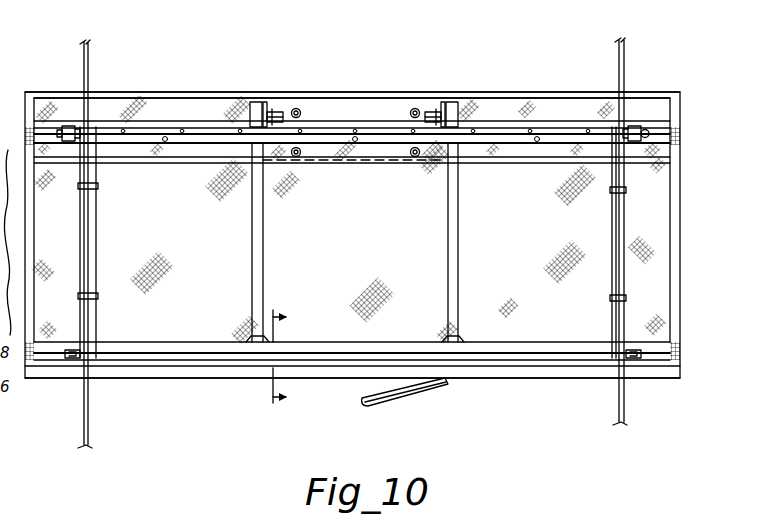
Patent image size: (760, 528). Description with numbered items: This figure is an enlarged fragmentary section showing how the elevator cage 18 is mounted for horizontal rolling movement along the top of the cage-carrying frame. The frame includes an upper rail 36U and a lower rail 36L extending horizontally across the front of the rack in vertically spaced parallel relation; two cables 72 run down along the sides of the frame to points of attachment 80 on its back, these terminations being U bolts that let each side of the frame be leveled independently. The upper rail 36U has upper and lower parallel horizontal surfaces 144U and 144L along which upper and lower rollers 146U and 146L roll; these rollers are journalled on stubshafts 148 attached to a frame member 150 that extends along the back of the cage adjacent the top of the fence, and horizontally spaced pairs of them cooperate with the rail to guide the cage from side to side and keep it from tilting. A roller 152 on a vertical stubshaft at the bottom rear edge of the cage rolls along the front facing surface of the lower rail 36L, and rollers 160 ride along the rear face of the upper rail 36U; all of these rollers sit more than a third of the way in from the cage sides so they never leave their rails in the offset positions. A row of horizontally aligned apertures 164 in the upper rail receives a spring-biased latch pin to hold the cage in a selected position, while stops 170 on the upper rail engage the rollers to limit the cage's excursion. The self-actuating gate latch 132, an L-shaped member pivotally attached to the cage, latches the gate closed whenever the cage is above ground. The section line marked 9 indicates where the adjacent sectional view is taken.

The elevator cage 18 is at (143, 333).
The upper rail 36U is at (188, 122).
The lower rail 36L is at (342, 362).
The cables 72 is at (89, 70).
The points of attachment 80 is at (97, 185).
The gate latch 132 is at (392, 403).
The upper horizontal surface 144U is at (305, 122).
The lower horizontal surface 144L is at (518, 145).
The upper rollers 146U is at (294, 108).
The lower rollers 146L is at (296, 157).
The stubshafts 148 is at (257, 341).
The frame member 150 is at (385, 162).
The roller 152 is at (246, 366).
The rollers 160 is at (252, 104).
The apertures 164 is at (357, 137).
The stops 170 is at (58, 135).
The section line 9- 9 is at (293, 360).